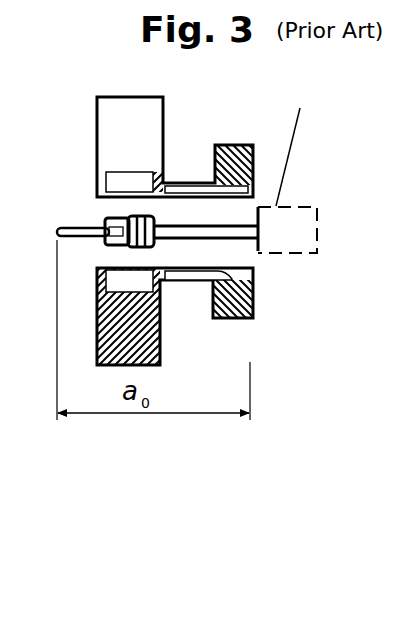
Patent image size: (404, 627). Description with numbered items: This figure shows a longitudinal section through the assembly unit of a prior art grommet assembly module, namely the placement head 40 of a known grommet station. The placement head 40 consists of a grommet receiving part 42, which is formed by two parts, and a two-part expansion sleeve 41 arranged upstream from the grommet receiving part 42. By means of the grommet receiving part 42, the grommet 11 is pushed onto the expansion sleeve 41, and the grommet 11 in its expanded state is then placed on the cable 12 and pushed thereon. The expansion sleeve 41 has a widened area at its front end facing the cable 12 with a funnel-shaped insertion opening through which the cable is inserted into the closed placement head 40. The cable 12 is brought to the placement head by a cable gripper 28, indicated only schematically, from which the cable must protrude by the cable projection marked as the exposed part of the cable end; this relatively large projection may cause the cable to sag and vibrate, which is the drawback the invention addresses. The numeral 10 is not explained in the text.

The placement head 40 is at (97, 58).
The grommet receiving part 42 is at (116, 112).
The expansion sleeve 41 is at (188, 280).
The grommet 11 is at (153, 218).
The cable 12 is at (64, 227).
The cable 10 is at (279, 252).
The cable gripper 28 is at (294, 222).